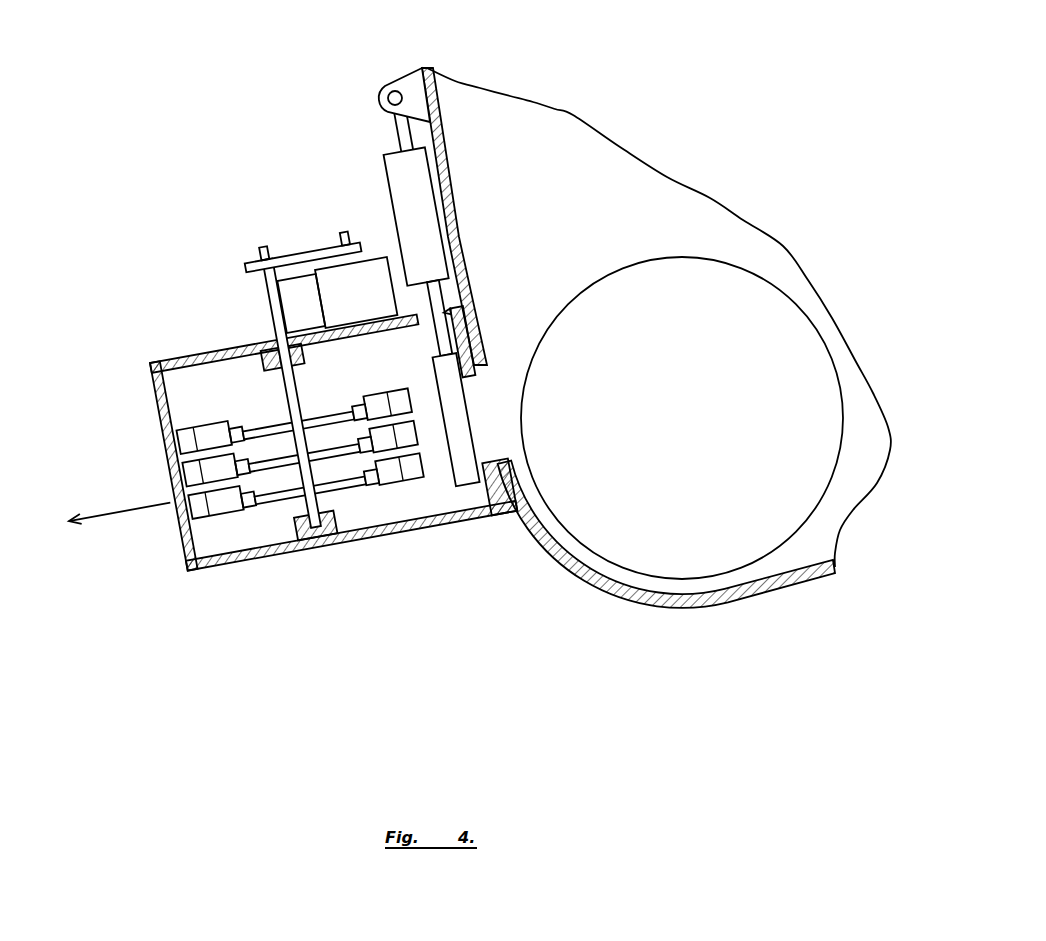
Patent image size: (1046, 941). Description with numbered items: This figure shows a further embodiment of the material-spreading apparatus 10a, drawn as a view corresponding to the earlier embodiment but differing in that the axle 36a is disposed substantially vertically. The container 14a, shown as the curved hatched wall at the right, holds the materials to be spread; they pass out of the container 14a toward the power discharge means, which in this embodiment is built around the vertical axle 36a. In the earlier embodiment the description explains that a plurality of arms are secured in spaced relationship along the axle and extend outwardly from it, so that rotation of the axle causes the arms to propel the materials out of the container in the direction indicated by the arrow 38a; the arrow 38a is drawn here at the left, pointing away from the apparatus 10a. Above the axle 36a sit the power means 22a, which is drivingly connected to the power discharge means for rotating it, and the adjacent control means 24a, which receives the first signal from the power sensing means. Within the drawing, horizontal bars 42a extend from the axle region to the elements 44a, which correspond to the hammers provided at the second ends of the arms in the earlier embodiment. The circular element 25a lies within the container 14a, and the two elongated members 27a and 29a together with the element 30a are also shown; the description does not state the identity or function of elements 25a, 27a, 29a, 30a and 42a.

The apparatus 10a is at (213, 232).
The container 14a is at (660, 607).
The power means 22a is at (352, 300).
The control means 24a is at (300, 308).
The roll 25a is at (720, 478).
The upper hydraulic cylinder 27a is at (420, 203).
The lower hydraulic cylinder 29a is at (457, 413).
The housing 30a is at (265, 558).
The axle 36a is at (300, 468).
The arrow 38a is at (92, 518).
The connecting bars 42a is at (348, 485).
The hammer 44a is at (425, 478).